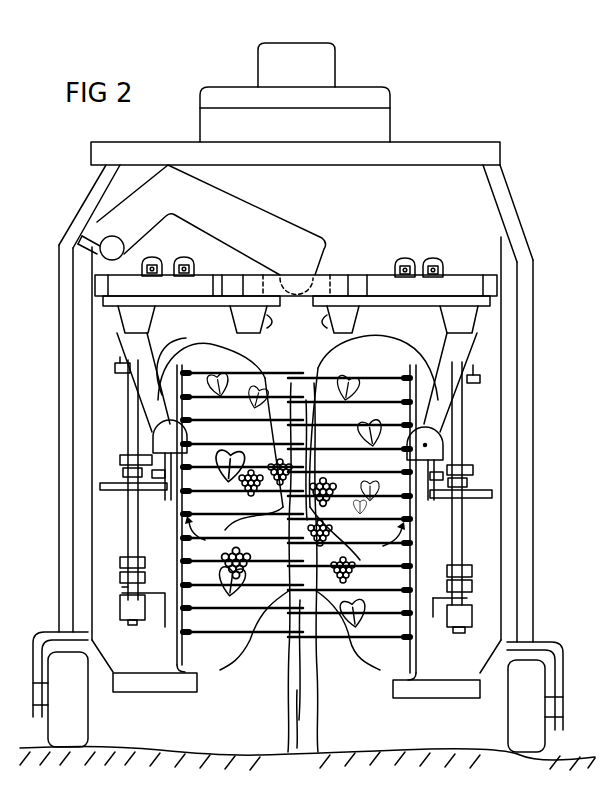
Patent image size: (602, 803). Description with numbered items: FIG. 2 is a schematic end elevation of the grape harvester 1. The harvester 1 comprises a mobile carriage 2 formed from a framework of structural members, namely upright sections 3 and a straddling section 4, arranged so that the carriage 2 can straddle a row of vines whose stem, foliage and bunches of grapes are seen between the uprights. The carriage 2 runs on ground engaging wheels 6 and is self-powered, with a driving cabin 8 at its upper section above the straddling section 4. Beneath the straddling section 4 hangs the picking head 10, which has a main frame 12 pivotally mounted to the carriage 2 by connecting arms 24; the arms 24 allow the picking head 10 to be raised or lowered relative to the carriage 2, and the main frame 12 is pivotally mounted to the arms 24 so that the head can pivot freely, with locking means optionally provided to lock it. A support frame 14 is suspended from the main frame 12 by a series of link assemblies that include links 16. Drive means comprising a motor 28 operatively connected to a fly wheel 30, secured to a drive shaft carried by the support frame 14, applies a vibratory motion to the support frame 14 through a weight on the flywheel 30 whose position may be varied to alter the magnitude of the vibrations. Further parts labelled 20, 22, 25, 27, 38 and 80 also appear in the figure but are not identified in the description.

The harvester 1 is at (500, 125).
The mobile carriage 2 is at (518, 215).
The upright sections 3 is at (60, 343).
The straddling section 4 is at (432, 150).
The ground engaging wheels 6 is at (75, 712).
The driving cabin 8 is at (352, 95).
The picking head 10 is at (357, 266).
The main frame 12 is at (465, 290).
The support frame 14 is at (200, 545).
The links 16 is at (327, 603).
The connecting cable 20 is at (165, 630).
The base plate 22 is at (200, 675).
The connecting arms 24 is at (232, 207).
The inclined support brace 25 is at (147, 395).
The sensors 27 is at (184, 257).
The motor 28 is at (128, 607).
The fly wheel 30 is at (130, 525).
The horizontal bar 38 is at (104, 485).
The pivot dome housing 80 is at (170, 437).